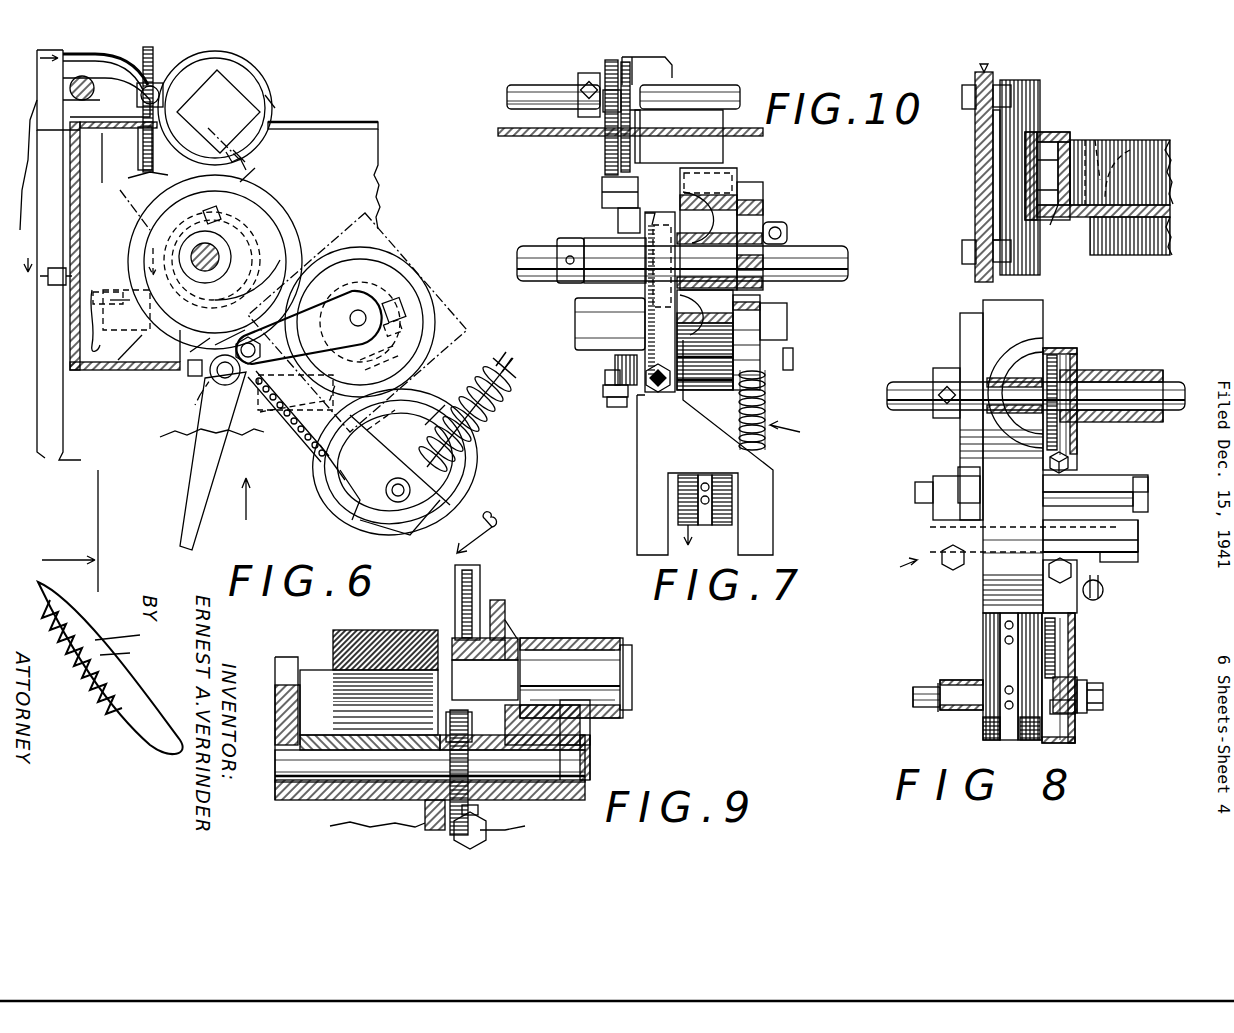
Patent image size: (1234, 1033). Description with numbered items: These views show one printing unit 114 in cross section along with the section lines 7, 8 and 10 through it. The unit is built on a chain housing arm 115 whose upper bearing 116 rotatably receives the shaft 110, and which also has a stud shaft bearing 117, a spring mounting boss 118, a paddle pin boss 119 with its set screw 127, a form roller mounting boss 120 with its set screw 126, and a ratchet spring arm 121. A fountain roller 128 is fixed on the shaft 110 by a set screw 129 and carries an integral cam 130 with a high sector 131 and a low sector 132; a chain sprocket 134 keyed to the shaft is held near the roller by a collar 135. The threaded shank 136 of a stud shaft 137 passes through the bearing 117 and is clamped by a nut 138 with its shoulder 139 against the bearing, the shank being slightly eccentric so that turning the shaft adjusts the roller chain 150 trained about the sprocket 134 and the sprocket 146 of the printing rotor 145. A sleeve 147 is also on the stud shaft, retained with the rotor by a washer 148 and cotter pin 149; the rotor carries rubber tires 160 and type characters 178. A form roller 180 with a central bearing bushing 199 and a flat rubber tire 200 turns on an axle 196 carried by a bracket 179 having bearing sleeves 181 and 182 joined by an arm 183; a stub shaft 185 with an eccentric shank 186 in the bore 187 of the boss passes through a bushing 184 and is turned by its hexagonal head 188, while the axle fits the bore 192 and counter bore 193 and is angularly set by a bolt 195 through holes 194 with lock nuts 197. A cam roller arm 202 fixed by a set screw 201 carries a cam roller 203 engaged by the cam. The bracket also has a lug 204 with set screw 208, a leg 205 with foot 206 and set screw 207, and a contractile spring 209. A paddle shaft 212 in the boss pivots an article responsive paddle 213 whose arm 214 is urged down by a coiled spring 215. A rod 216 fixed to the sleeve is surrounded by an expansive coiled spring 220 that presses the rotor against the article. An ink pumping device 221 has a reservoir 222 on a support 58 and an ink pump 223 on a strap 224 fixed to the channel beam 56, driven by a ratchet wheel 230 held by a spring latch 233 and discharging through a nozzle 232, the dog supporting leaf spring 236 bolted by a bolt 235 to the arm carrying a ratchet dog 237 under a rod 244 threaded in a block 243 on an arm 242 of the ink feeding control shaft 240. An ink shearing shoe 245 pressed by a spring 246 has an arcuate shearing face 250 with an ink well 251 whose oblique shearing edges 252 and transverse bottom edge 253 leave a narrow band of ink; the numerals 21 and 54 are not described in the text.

In FIG. 6, the section line 7- 7 is at (70, 531).
In FIG. 6, the section line 8- 8 is at (477, 532).
In FIG. 6, the section line 10- 10 is at (85, 260).
In FIG. 6, the plate 21 is at (337, 118).
In FIG. 7, the plate 21 is at (534, 142).
In FIG. 6, the frame wall 54 is at (380, 190).
In FIG. 6, the channel beam 56 is at (90, 183).
In FIG. 6, the support 58 is at (58, 216).
In FIG. 10, the support 58 is at (975, 148).
In FIG. 6, the shaft 110 is at (190, 250).
In FIG. 7, the shaft 110 is at (800, 248).
In FIG. 8, the shaft 110 is at (1165, 380).
In FIG. 6, the printing unit 114 is at (247, 508).
In FIG. 7, the printing unit 114 is at (801, 431).
In FIG. 8, the printing unit 114 is at (891, 568).
In FIG. 6, the chain housing arm 115 is at (398, 535).
In FIG. 7, the chain housing arm 115 is at (648, 290).
In FIG. 8, the chain housing arm 115 is at (1077, 440).
In FIG. 9, the chain housing arm 115 is at (505, 615).
In FIG. 7, the bearing 116 is at (610, 237).
In FIG. 8, the bearing 116 is at (1100, 372).
In FIG. 8, the stud shaft bearing 117 is at (1078, 676).
In FIG. 8, the spring mounting boss 118 is at (1082, 600).
In FIG. 6, the paddle pin boss 119 is at (196, 405).
In FIG. 7, the paddle pin boss 119 is at (615, 365).
In FIG. 8, the form roller mounting boss 120 is at (1075, 490).
In FIG. 9, the form roller mounting boss 120 is at (455, 640).
In FIG. 6, the ratchet spring arm 121 is at (290, 222).
In FIG. 7, the ratchet spring arm 121 is at (645, 205).
In FIG. 8, the set screw 126 is at (1070, 460).
In FIG. 6, the set screw 127 is at (188, 370).
In FIG. 7, the set screw 127 is at (658, 395).
In FIG. 6, the fountain roller 128 is at (285, 212).
In FIG. 7, the fountain roller 128 is at (740, 176).
In FIG. 8, the fountain roller 128 is at (1035, 302).
In FIG. 7, the set screw 129 is at (780, 225).
In FIG. 8, the set screw 129 is at (938, 383).
In FIG. 6, the cam 130 is at (137, 200).
In FIG. 7, the cam 130 is at (778, 188).
In FIG. 10, the cam 130 is at (1114, 265).
In FIG. 8, the cam 130 is at (958, 432).
In FIG. 6, the high sector 131 is at (263, 165).
In FIG. 6, the low sector 132 is at (126, 311).
In FIG. 6, the chain sprocket 134 is at (222, 285).
In FIG. 7, the chain sprocket 134 is at (688, 256).
In FIG. 8, the chain sprocket 134 is at (1028, 378).
In FIG. 7, the collar 135 is at (575, 227).
In FIG. 8, the collar 135 is at (1148, 422).
In FIG. 8, the threaded shank 136 is at (1092, 684).
In FIG. 6, the stud shaft 137 is at (373, 527).
In FIG. 8, the stud shaft 137 is at (930, 710).
In FIG. 8, the nut 138 is at (1115, 701).
In FIG. 8, the shoulder 139 is at (1075, 710).
In FIG. 6, the printing rotor 145 is at (488, 472).
In FIG. 7, the printing rotor 145 is at (683, 545).
In FIG. 8, the printing rotor 145 is at (985, 725).
In FIG. 6, the sprocket 146 is at (339, 479).
In FIG. 8, the sprocket 146 is at (1045, 745).
In FIG. 8, the sleeve 147 is at (968, 668).
In FIG. 6, the washer 148 is at (410, 498).
In FIG. 8, the washer 148 is at (935, 683).
In FIG. 6, the cotter pin 149 is at (412, 490).
In FIG. 8, the cotter pin 149 is at (925, 690).
In FIG. 6, the roller chain 150 is at (298, 455).
In FIG. 8, the roller chain 150 is at (1076, 650).
In FIG. 9, the roller chain 150 is at (480, 575).
In FIG. 7, the rubber tire 160 is at (715, 528).
In FIG. 8, the rubber tire 160 is at (1028, 637).
In FIG. 6, the type characters 178 is at (432, 397).
In FIG. 7, the type characters 178 is at (770, 394).
In FIG. 8, the type characters 178 is at (1007, 643).
In FIG. 6, the bracket 179 is at (345, 295).
In FIG. 8, the bracket 179 is at (1125, 525).
In FIG. 9, the bracket 179 is at (604, 740).
In FIG. 6, the form roller 180 is at (420, 278).
In FIG. 7, the form roller 180 is at (585, 308).
In FIG. 8, the form roller 180 is at (1043, 518).
In FIG. 9, the form roller 180 is at (324, 688).
In FIG. 7, the bearing sleeve 181 is at (590, 322).
In FIG. 8, the bearing sleeve 181 is at (1120, 478).
In FIG. 9, the bearing sleeve 181 is at (590, 645).
In FIG. 8, the bearing sleeve 182 is at (1120, 560).
In FIG. 9, the bearing sleeve 182 is at (585, 800).
In FIG. 6, the arm 183 is at (355, 300).
In FIG. 8, the arm 183 is at (1130, 535).
In FIG. 9, the arm 183 is at (545, 722).
In FIG. 9, the bushing 184 is at (560, 650).
In FIG. 9, the stub shaft 185 is at (604, 656).
In FIG. 9, the eccentric shank 186 is at (510, 624).
In FIG. 9, the bore 187 is at (508, 645).
In FIG. 8, the hexagonal head 188 is at (1150, 500).
In FIG. 9, the hexagonal head 188 is at (632, 670).
In FIG. 9, the bore 192 is at (590, 750).
In FIG. 9, the counter bore 193 is at (570, 735).
In FIG. 9, the holes 194 is at (468, 722).
In FIG. 8, the bolt 195 is at (1045, 540).
In FIG. 9, the bolt 195 is at (425, 812).
In FIG. 6, the form roller axle 196 is at (308, 327).
In FIG. 8, the form roller axle 196 is at (1125, 548).
In FIG. 9, the form roller axle 196 is at (585, 762).
In FIG. 9, the lock nuts 197 is at (446, 722).
In FIG. 9, the central bearing bushing 199 is at (340, 735).
In FIG. 6, the flat rubber tire 200 is at (430, 300).
In FIG. 9, the flat rubber tire 200 is at (370, 632).
In FIG. 6, the set screw 201 is at (400, 296).
In FIG. 8, the set screw 201 is at (950, 568).
In FIG. 8, the cam roller arm 202 is at (933, 512).
In FIG. 9, the cam roller arm 202 is at (300, 802).
In FIG. 6, the cam roller 203 is at (210, 340).
In FIG. 8, the cam roller 203 is at (958, 474).
In FIG. 6, the lug 204 is at (387, 357).
In FIG. 8, the lug 204 is at (1100, 582).
In FIG. 9, the lug 204 is at (540, 830).
In FIG. 6, the leg 205 is at (270, 350).
In FIG. 6, the foot 206 is at (300, 432).
In FIG. 6, the set screw 207 is at (260, 349).
In FIG. 6, the set screw 208 is at (401, 331).
In FIG. 8, the set screw 208 is at (1076, 568).
In FIG. 9, the set screw 208 is at (488, 832).
In FIG. 8, the contractile spring 209 is at (1104, 592).
In FIG. 6, the paddle shaft 212 is at (95, 88).
In FIG. 7, the paddle shaft 212 is at (605, 377).
In FIG. 6, the article responsive paddle 213 is at (210, 460).
In FIG. 7, the article responsive paddle 213 is at (640, 456).
In FIG. 6, the arm 214 is at (281, 392).
In FIG. 7, the arm 214 is at (603, 391).
In FIG. 6, the coiled spring 215 is at (286, 405).
In FIG. 7, the coiled spring 215 is at (607, 403).
In FIG. 6, the rod 216 is at (500, 364).
In FIG. 6, the expansive coiled spring 220 is at (473, 428).
In FIG. 6, the ink pumping device 221 is at (270, 77).
In FIG. 6, the ink reservoir 222 is at (38, 165).
In FIG. 6, the ink pump 223 is at (218, 111).
In FIG. 6, the strap 224 is at (228, 69).
In FIG. 7, the strap 224 is at (672, 66).
In FIG. 6, the ratchet wheel 230 is at (272, 108).
In FIG. 7, the ratchet wheel 230 is at (632, 118).
In FIG. 6, the nozzle 232 is at (246, 149).
In FIG. 6, the spring latch 233 is at (153, 70).
In FIG. 7, the spring latch 233 is at (605, 64).
In FIG. 6, the bolt 235 is at (225, 210).
In FIG. 7, the bolt 235 is at (665, 208).
In FIG. 6, the dog supporting leaf spring 236 is at (150, 170).
In FIG. 7, the dog supporting leaf spring 236 is at (602, 188).
In FIG. 6, the ratchet dog 237 is at (218, 144).
In FIG. 6, the ink feeding control shaft 240 is at (94, 97).
In FIG. 7, the ink feeding control shaft 240 is at (528, 85).
In FIG. 7, the arm 242 is at (578, 112).
In FIG. 6, the block 243 is at (165, 95).
In FIG. 7, the block 243 is at (630, 82).
In FIG. 6, the rod 244 is at (138, 145).
In FIG. 7, the rod 244 is at (590, 74).
In FIG. 6, the ink shearing shoe 245 is at (108, 348).
In FIG. 10, the ink shearing shoe 245 is at (1076, 126).
In FIG. 6, the spring 246 is at (92, 338).
In FIG. 10, the spring 246 is at (1040, 262).
In FIG. 6, the arcuate shearing face 250 is at (135, 362).
In FIG. 10, the arcuate shearing face 250 is at (1060, 215).
In FIG. 6, the ink well 251 is at (110, 292).
In FIG. 10, the ink well 251 is at (1045, 140).
In FIG. 10, the oblique shearing edges 252 is at (1095, 140).
In FIG. 10, the transverse bottom edge 253 is at (1130, 150).